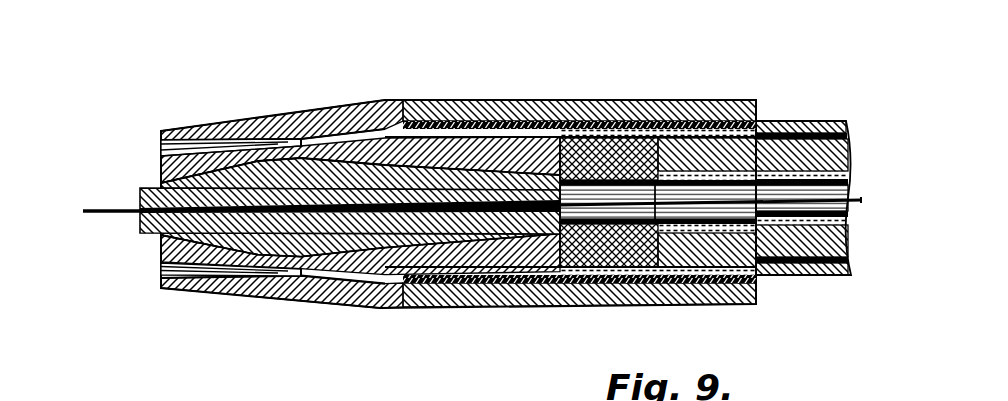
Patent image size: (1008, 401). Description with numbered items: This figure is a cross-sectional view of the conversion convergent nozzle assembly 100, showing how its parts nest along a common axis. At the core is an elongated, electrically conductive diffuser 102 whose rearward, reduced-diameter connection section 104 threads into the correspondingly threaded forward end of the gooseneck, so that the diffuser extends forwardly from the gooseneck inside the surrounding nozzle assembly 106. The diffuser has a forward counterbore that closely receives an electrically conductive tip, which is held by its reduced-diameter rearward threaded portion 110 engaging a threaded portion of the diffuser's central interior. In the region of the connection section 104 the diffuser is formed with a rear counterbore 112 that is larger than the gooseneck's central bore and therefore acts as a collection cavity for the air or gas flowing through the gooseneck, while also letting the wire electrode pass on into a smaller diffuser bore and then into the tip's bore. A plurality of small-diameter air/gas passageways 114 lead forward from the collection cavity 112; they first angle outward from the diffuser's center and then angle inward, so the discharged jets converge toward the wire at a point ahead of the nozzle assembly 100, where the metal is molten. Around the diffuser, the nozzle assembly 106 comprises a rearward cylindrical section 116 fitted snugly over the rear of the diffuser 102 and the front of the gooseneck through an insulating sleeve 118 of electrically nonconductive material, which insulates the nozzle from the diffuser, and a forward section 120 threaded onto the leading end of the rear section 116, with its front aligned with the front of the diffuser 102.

The conversion convergent nozzle assembly 100 is at (422, 70).
The diffuser 102 is at (323, 302).
The connection section 104 is at (613, 120).
The nozzle assembly 106 is at (255, 102).
The rearward threaded portion 110 is at (448, 302).
The rear counterbore 112 is at (587, 303).
The air/gas passageways 114 is at (367, 302).
The rearward cylindrical section 116 is at (487, 92).
The insulating sleeve 118 is at (685, 92).
The forward section 120 is at (207, 115).